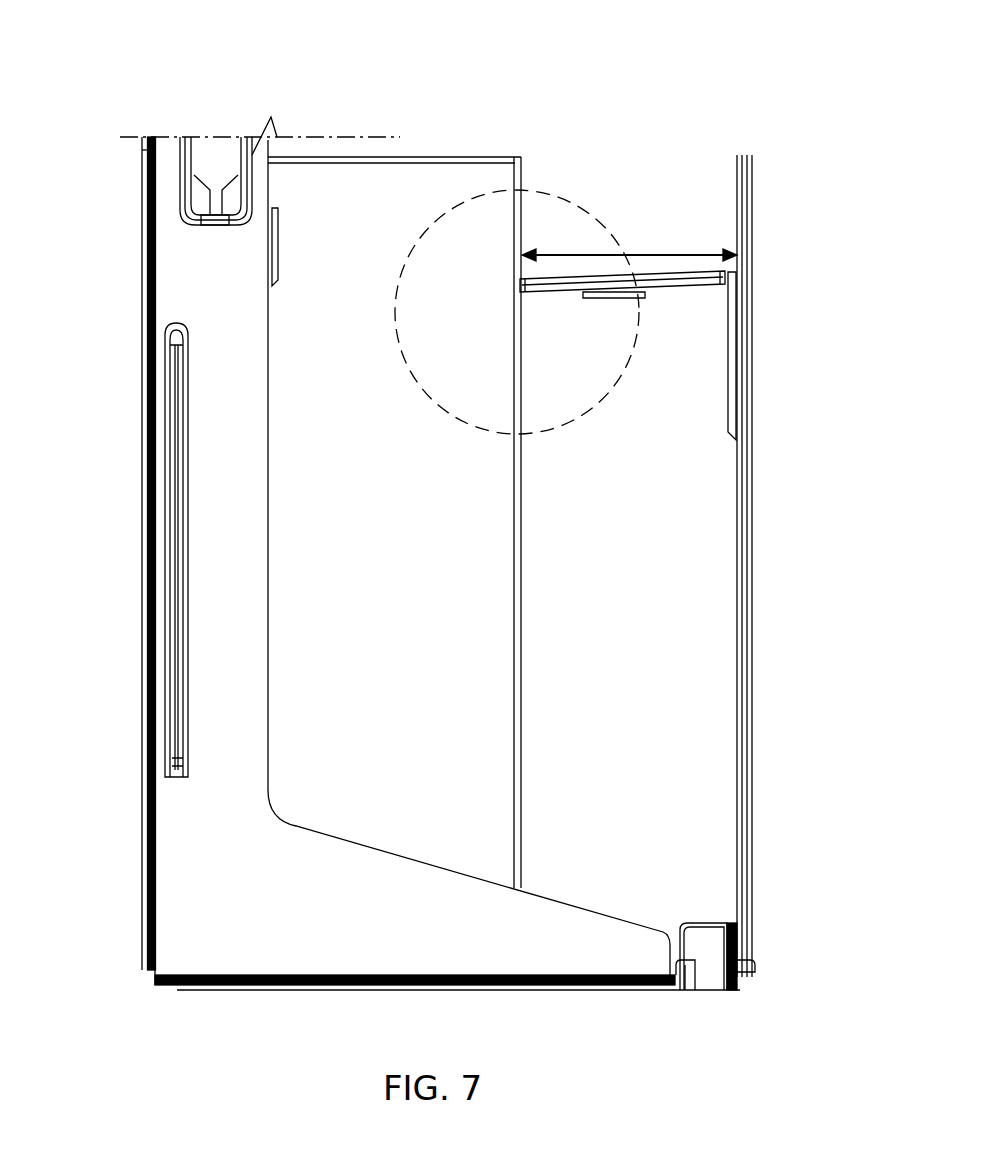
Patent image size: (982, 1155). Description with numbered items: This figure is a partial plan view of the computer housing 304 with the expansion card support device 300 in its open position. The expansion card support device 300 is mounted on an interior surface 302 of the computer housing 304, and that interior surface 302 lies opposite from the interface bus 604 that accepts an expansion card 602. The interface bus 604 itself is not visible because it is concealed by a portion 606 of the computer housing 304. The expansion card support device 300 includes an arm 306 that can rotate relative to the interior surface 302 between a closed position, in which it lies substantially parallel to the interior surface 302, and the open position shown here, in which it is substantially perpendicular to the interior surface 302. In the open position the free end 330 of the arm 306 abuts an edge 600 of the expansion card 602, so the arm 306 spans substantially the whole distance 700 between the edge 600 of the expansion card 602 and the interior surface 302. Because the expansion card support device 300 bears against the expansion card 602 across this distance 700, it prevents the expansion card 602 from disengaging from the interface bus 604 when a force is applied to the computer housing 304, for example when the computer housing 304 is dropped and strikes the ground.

The expansion card support device 300 is at (640, 378).
The interior surface 302 is at (752, 725).
The computer housing 304 is at (598, 93).
The arm 306 is at (595, 296).
The free end 330 is at (522, 292).
The edge 600 is at (455, 557).
The expansion card 602 is at (357, 457).
The interface bus 604 is at (149, 585).
The portion 606 is at (155, 693).
The distance 700 is at (688, 252).